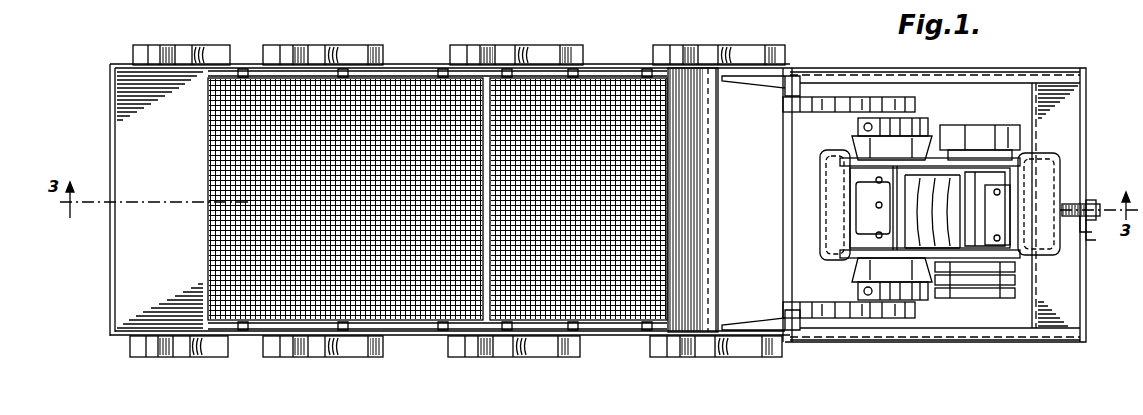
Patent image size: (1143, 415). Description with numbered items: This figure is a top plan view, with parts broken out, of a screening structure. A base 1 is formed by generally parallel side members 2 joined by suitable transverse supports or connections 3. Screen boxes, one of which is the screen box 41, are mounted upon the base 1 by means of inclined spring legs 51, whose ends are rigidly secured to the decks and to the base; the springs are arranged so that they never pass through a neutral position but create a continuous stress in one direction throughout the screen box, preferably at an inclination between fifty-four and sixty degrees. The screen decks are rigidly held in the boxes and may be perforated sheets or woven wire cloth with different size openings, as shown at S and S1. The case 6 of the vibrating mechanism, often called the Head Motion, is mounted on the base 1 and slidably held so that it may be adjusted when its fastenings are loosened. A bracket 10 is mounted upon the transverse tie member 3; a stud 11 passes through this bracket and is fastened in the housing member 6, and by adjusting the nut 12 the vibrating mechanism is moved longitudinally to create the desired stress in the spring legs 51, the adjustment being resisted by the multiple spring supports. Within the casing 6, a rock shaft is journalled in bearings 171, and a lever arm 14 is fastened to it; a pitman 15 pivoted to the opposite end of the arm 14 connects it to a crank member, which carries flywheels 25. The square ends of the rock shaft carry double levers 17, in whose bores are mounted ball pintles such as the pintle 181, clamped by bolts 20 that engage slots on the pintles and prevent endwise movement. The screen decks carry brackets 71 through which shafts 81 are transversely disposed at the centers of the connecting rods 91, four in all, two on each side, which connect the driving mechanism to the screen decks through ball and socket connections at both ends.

The base 1 is at (1005, 345).
The side members 2 is at (1040, 345).
The transverse supports 3 is at (1074, 288).
The screen box 41 is at (625, 48).
The spring legs 51 is at (216, 62).
The case of the vibrating mechanism 6 is at (1058, 250).
The brackets 71 is at (752, 88).
The shafts 81 is at (782, 230).
The connecting rods 91 is at (835, 70).
The bracket 10 is at (1094, 208).
The stud 11 is at (1094, 232).
The nut 12 is at (1098, 204).
The lever arm 14 is at (928, 260).
The pitman 15 is at (1010, 215).
The double levers 17 is at (905, 118).
The bearings 171 is at (928, 140).
The ball pintle 181 is at (900, 104).
The bolts 20 is at (925, 150).
The flywheels 25 is at (1005, 126).
The screen deck S is at (420, 312).
The screen deck S1 is at (612, 315).